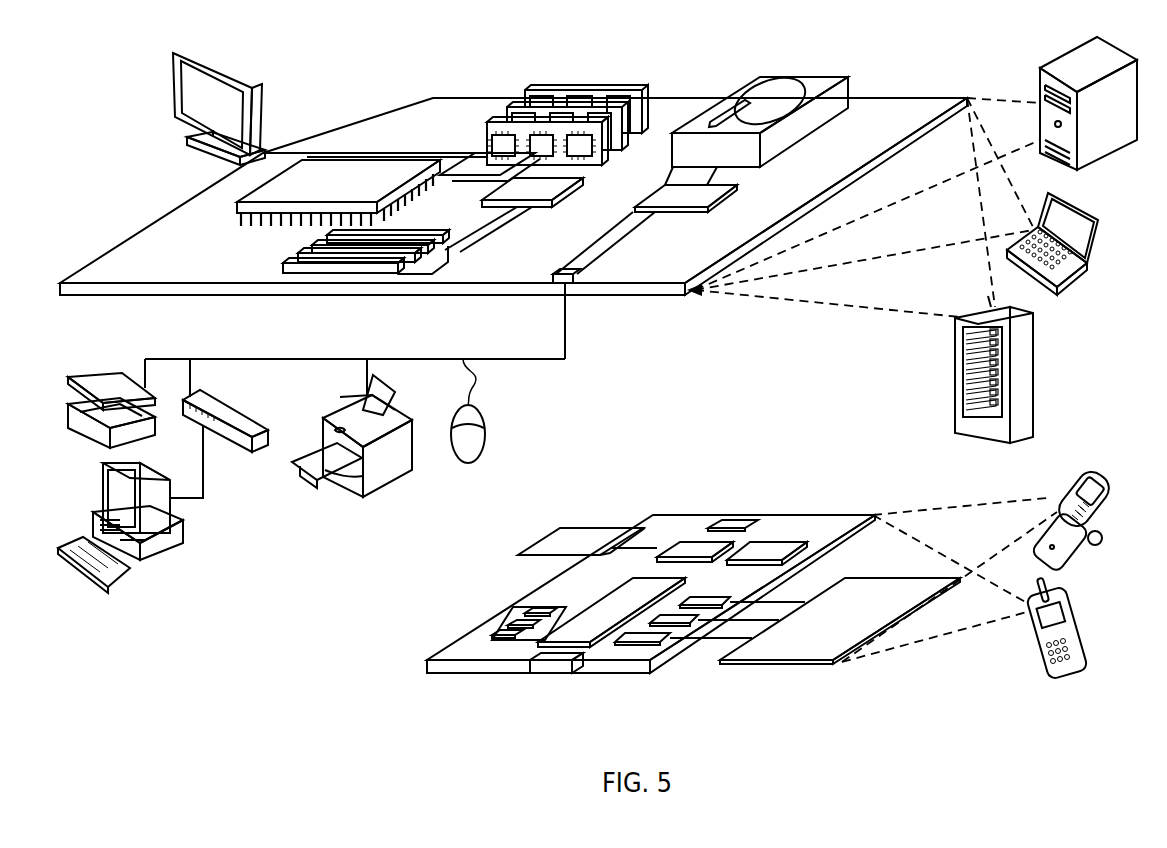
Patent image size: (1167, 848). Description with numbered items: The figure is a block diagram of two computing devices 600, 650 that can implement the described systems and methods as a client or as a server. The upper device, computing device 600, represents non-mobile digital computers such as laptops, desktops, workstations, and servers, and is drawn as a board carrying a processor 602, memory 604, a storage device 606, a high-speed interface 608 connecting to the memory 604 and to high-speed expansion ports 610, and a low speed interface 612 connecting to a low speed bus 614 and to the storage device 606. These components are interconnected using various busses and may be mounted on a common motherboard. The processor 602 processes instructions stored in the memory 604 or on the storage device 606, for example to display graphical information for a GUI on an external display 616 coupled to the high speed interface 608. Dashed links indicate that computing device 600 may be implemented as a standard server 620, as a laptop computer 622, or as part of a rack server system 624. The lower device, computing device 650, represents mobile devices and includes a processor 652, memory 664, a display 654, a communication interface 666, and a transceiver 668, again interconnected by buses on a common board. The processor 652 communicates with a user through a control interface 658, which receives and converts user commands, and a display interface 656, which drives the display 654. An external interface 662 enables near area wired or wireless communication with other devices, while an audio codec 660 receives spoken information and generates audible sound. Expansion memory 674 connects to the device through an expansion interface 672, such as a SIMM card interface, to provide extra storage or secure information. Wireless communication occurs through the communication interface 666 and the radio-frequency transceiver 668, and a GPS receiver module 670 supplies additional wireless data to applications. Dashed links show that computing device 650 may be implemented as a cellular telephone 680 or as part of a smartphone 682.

The computing device 600 is at (351, 72).
The processor 602 is at (235, 206).
The memory 604 is at (537, 95).
The storage device 606 is at (757, 80).
The high-speed interface 608 is at (500, 183).
The high-speed expansion ports 610 is at (300, 258).
The low speed interface 612 is at (668, 185).
The low speed bus 614 is at (577, 282).
The display 616 is at (176, 52).
The standard server 620 is at (1040, 84).
The laptop computer 622 is at (1098, 224).
The rack server system 624 is at (957, 397).
The computing device 650 is at (403, 670).
The processor 652 is at (585, 632).
The display 654 is at (803, 650).
The display interface 656 is at (650, 642).
The control interface 658 is at (677, 620).
The audio codec 660 is at (702, 600).
The external interface 662 is at (556, 661).
The memory 664 is at (512, 620).
The communication interface 666 is at (693, 548).
The transceiver 668 is at (767, 548).
The GPS receiver module 670 is at (738, 518).
The expansion interface 672 is at (615, 528).
The expansion memory 674 is at (560, 528).
The cellular telephone 680 is at (1083, 493).
The smartphone 682 is at (1026, 636).